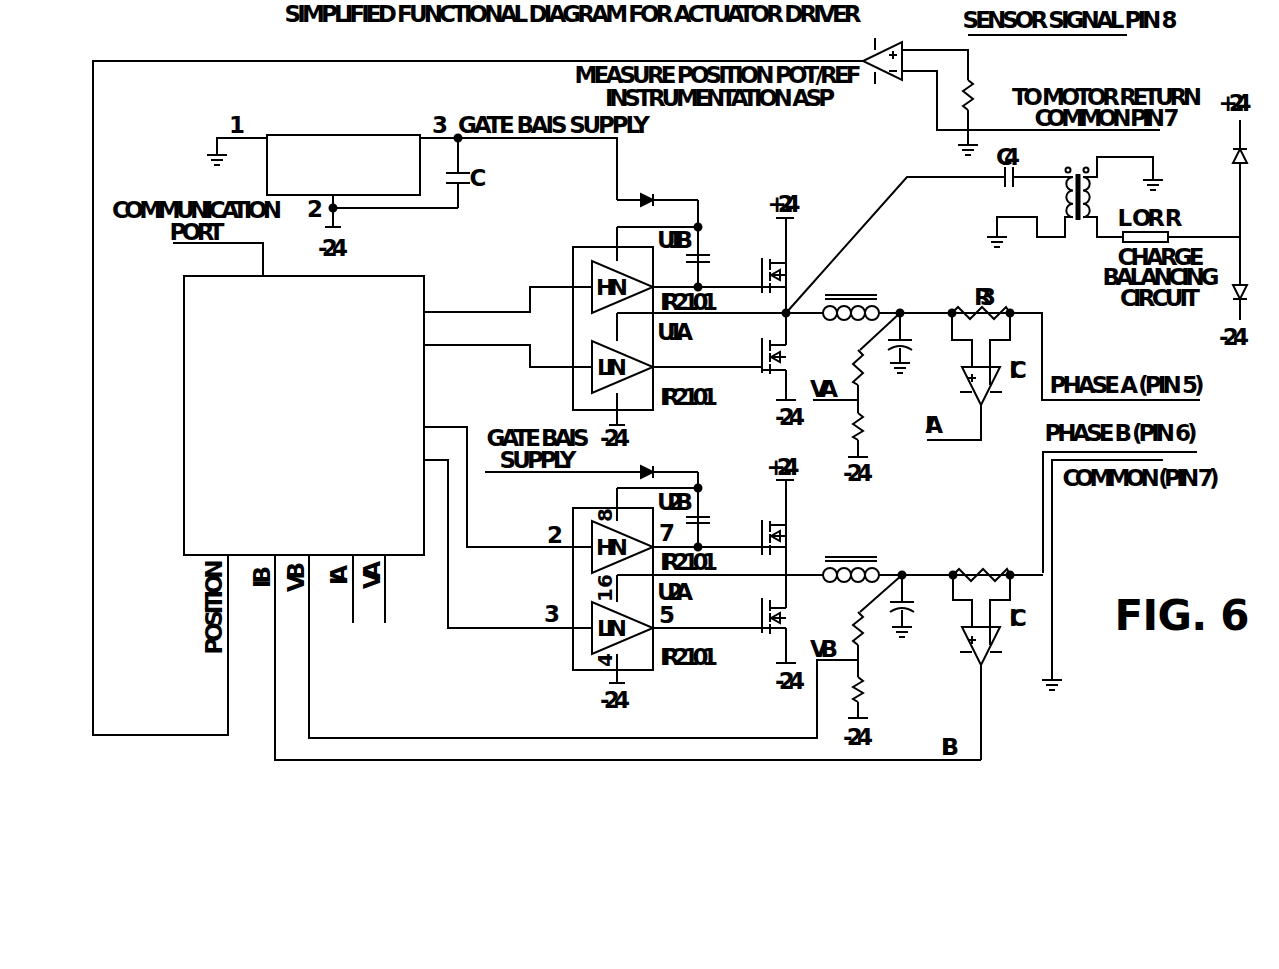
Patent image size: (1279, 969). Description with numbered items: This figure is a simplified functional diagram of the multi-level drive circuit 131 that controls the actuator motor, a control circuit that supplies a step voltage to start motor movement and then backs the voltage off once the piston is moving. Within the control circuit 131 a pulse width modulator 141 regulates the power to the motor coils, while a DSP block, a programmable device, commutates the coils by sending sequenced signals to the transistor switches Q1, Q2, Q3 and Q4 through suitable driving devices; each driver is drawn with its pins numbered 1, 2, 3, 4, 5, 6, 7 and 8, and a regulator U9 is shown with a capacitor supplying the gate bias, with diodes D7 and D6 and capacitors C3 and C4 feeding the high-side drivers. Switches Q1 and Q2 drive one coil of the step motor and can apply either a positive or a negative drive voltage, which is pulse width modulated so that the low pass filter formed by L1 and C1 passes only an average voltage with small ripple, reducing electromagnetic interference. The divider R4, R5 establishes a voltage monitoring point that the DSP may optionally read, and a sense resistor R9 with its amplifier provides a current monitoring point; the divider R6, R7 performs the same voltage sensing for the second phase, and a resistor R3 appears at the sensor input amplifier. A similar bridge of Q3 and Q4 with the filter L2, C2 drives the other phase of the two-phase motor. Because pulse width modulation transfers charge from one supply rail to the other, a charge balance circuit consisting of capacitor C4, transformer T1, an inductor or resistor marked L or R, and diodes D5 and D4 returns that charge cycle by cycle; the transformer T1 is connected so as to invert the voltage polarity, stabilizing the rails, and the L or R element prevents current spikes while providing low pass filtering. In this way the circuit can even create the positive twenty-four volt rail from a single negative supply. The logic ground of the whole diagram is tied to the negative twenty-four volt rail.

The multi-level drive circuit 131 is at (445, 384).
The pulse width modulator 141 is at (207, 386).
The voltage regulator U9 is at (343, 152).
The transistor switch Q1 is at (766, 263).
The transistor switch Q2 is at (766, 369).
The transistor switch Q3 is at (766, 525).
The transistor switch Q4 is at (766, 631).
The low pass filter inductor L1 is at (851, 295).
The low pass filter inductor L2 is at (851, 556).
The low pass filter capacitor C1 is at (915, 343).
The low pass filter capacitor C2 is at (917, 606).
The bootstrap capacitor U1 C3 is at (711, 257).
The charge balance capacitor C4 is at (711, 520).
The resistor R3 is at (981, 95).
The voltage monitoring resistor R4 is at (847, 364).
The voltage monitoring resistor R5 is at (872, 426).
The voltage divider resistor R6 is at (847, 625).
The voltage divider resistor R7 is at (872, 688).
The current sense resistor R9 is at (981, 563).
The charge balance diode D4 is at (1255, 287).
The charge balance diode D5 is at (1255, 157).
The bootstrap diode D6 is at (659, 461).
The bootstrap diode D7 is at (657, 188).
The transformer T1 is at (1078, 209).
The IR2101 pin 1 (VCC) 1 is at (605, 327).
The IR2101 pin 2 (HIN) 2 is at (569, 273).
The IR2101 pin 3 (LIN) 3 is at (568, 353).
The IR2101 pin 4 (COM) 4 is at (609, 409).
The IR2101 pin 5 (LO) 5 is at (671, 355).
The IR2101 pin 6 (VS) 6 is at (623, 320).
The IR2101 pin 7 (HO) 7 is at (671, 273).
The IR2101 pin 8 (VB) 8 is at (605, 254).